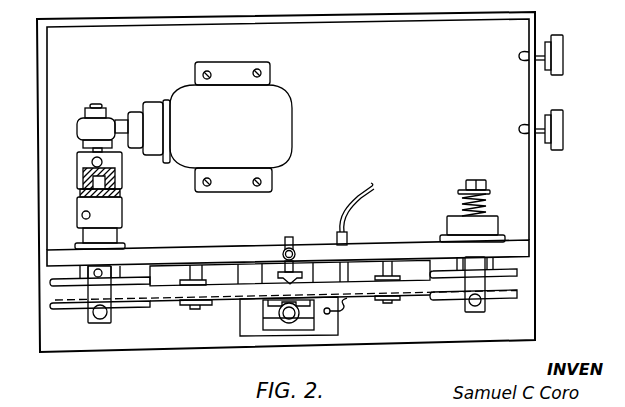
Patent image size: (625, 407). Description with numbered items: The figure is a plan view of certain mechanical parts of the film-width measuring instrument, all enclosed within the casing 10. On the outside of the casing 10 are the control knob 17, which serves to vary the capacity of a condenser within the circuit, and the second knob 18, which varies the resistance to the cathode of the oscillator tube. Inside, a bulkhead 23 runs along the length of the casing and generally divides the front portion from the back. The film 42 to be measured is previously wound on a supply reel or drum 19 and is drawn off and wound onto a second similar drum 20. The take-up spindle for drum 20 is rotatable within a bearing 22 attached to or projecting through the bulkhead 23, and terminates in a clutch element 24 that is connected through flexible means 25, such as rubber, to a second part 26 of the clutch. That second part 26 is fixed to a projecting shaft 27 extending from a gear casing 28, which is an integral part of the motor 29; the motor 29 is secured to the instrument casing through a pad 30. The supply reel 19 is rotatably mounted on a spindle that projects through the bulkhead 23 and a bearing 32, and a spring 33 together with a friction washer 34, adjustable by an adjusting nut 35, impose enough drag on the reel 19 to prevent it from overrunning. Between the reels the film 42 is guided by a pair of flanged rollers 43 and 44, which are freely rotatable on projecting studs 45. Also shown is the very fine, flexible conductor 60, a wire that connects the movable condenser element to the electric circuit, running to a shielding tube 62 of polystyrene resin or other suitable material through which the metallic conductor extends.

The casing 10 is at (538, 183).
The control knob 17 is at (556, 135).
The knob 18 is at (556, 56).
The reel or drum 19 is at (505, 297).
The drum 20 is at (82, 308).
The bearing 22 is at (105, 237).
The bulkhead 23 is at (177, 257).
The clutch element 24 is at (107, 216).
The flexible means 25 is at (78, 197).
The second part of the clutch 26 is at (84, 162).
The projecting shaft 27 is at (98, 150).
The gear casing 28 is at (84, 128).
The motor 29 is at (187, 112).
The pad 30 is at (230, 72).
The bearing 32 is at (462, 222).
The spring 33 is at (487, 203).
The friction washer 34 is at (486, 188).
The adjusting nut 35 is at (470, 183).
The film 42 is at (420, 290).
The flanged roller 43 is at (380, 303).
The flanged roller 44 is at (190, 307).
The projecting studs 45 is at (197, 272).
The conductor 60 is at (364, 208).
The shielding tube 62 is at (348, 240).